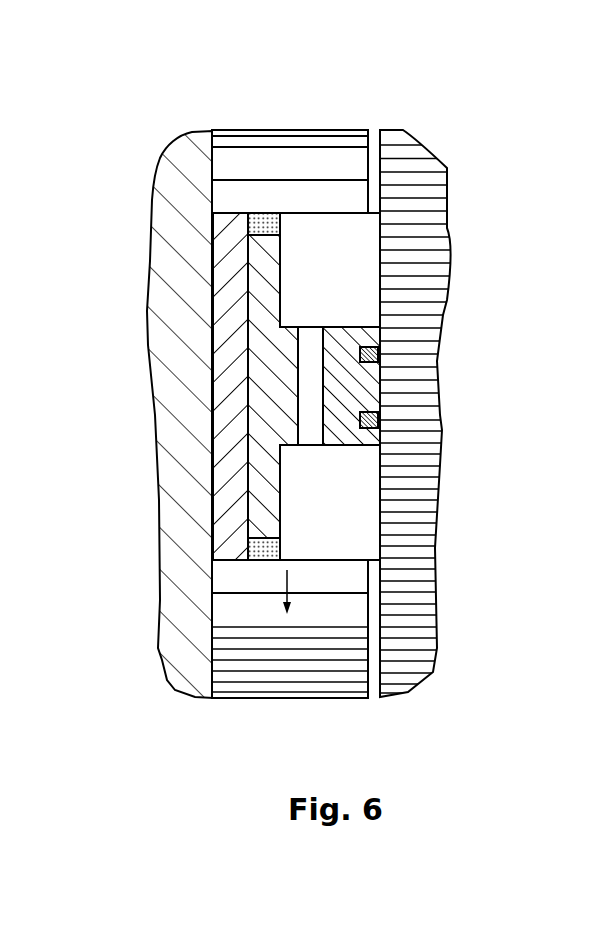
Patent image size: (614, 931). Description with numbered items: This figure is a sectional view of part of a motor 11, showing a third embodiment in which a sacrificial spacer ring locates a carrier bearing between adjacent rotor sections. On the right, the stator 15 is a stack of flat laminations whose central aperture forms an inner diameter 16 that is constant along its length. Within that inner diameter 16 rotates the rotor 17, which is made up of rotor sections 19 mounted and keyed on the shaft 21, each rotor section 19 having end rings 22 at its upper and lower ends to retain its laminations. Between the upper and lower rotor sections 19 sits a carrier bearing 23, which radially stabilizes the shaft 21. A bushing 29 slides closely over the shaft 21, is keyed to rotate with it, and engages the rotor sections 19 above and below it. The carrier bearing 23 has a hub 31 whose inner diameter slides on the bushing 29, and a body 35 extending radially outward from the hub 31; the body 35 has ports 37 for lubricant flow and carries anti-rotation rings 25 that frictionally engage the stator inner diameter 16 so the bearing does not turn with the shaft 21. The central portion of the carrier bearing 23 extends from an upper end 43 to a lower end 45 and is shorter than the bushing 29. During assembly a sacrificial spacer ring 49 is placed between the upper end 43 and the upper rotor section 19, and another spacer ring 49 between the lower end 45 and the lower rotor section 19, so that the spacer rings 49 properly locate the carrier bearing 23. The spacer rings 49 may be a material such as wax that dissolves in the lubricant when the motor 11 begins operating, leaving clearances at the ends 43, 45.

The motor 11 is at (485, 165).
The stator 15 is at (432, 262).
The inner diameter 16 is at (368, 231).
The rotor 17 is at (350, 116).
The rotor section 19 is at (365, 373).
The shaft 21 is at (172, 470).
The end ring 22 is at (286, 135).
The carrier bearing 23 is at (238, 376).
The anti-rotation ring 25 is at (367, 350).
The bushing 29 is at (225, 313).
The hub 31 is at (277, 287).
The body 35 is at (288, 438).
The port 37 is at (303, 337).
The upper end 43 is at (268, 236).
The lower end 45 is at (253, 540).
The sacrificial spacer ring 49 is at (282, 226).